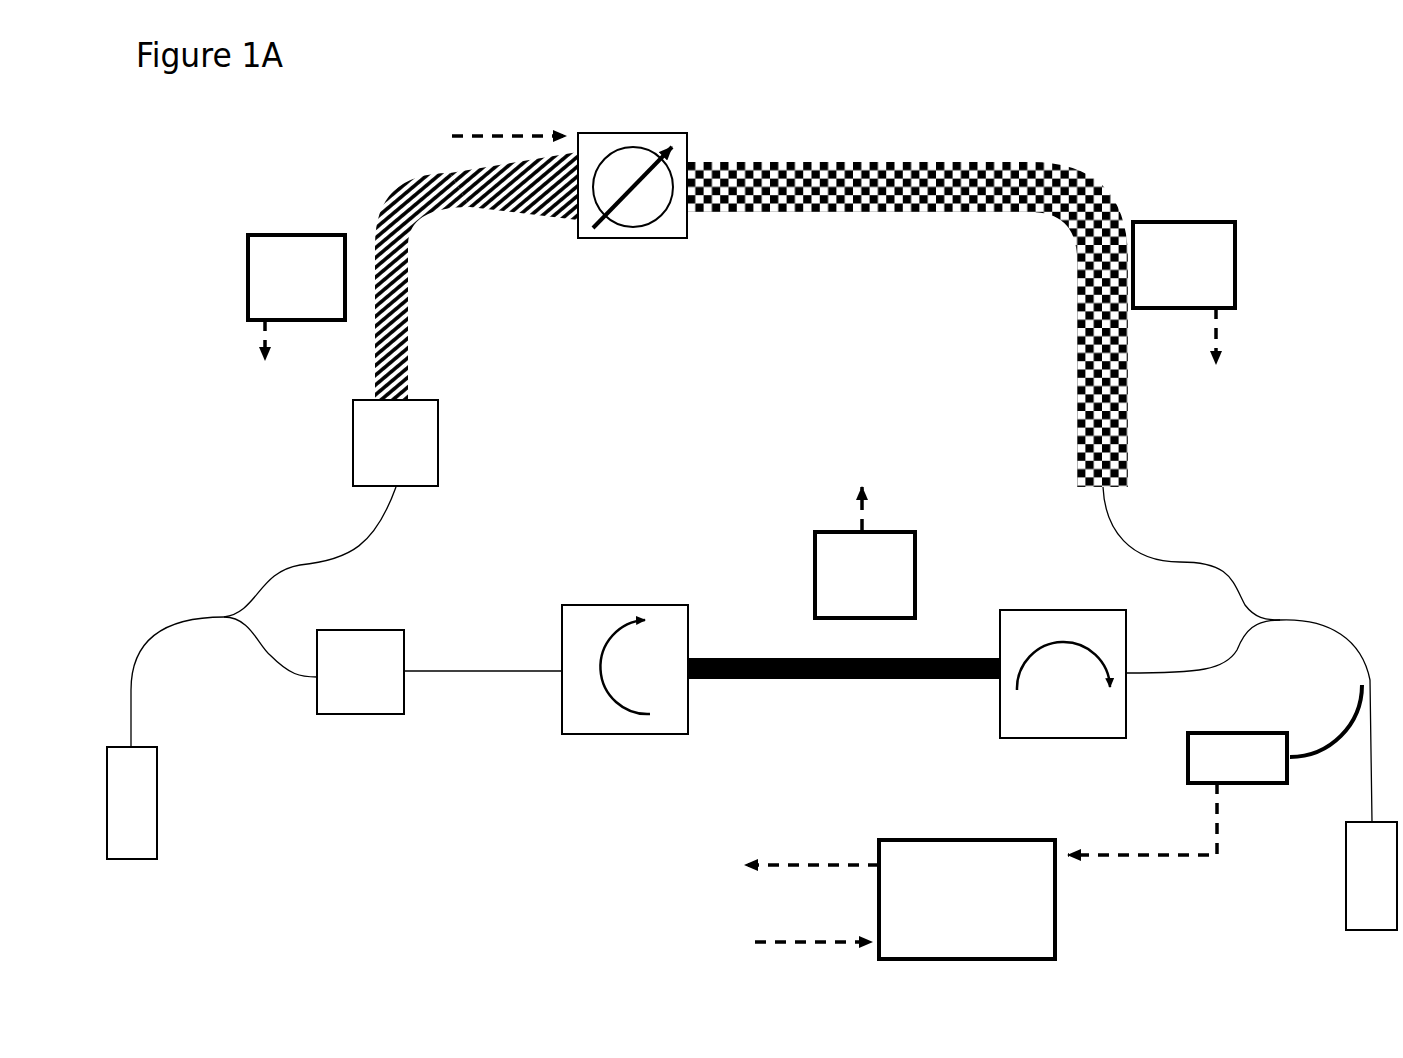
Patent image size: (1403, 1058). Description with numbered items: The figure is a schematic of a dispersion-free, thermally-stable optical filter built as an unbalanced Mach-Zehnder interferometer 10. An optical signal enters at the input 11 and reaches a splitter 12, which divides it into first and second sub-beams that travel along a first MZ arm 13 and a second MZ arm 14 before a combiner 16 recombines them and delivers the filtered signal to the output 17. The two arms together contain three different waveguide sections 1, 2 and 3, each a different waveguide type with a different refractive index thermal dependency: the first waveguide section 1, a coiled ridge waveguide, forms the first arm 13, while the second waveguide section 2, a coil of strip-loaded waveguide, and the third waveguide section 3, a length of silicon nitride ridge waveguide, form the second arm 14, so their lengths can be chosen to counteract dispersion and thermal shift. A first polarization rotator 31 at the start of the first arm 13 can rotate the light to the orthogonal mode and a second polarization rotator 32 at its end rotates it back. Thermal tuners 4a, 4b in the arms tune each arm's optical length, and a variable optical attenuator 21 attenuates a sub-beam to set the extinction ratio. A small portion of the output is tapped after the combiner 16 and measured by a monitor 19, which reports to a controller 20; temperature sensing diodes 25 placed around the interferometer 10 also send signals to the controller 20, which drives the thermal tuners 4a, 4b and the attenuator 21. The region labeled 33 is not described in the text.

The unbalanced Mach-Zehnder interferometer 10 is at (322, 188).
The first waveguide section 1 is at (844, 693).
The second waveguide section 2 is at (422, 286).
The third waveguide section 3 is at (907, 324).
The thermal tuner 4a is at (439, 694).
The thermal tuner 4b is at (377, 443).
The input 11 is at (182, 803).
The splitter 12 is at (263, 617).
The first MZ arm 13 is at (607, 778).
The second MZ arm 14 is at (907, 280).
The combiner 16 is at (1203, 580).
The output 17 is at (1338, 789).
The monitor 19 is at (1215, 770).
The controller 20 is at (898, 876).
The variable optical attenuator 21 is at (632, 208).
The temperature sensing diode 25 is at (745, 420).
The first polarization rotator 31 is at (625, 631).
The second polarization rotator 32 is at (1063, 636).
The fiber tapering section 33 is at (514, 204).